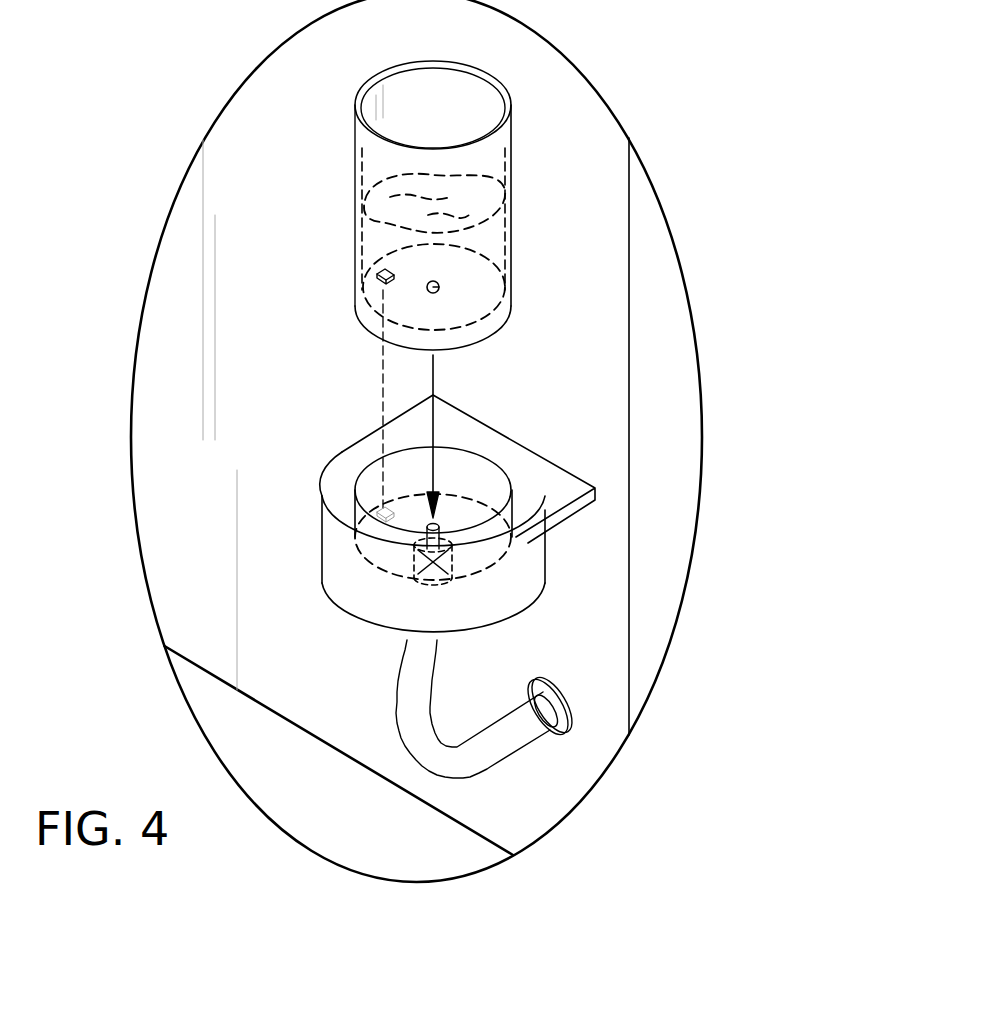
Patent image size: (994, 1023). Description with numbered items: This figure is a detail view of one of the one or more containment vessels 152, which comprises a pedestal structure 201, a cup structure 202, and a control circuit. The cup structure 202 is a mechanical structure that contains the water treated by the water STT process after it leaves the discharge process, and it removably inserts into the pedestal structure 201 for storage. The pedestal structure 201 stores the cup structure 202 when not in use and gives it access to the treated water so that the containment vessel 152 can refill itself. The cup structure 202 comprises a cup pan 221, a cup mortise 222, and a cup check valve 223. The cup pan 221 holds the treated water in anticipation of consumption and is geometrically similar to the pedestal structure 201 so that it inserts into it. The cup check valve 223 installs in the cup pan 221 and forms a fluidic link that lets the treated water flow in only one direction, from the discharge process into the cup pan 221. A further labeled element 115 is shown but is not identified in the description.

The containment vessel 152 is at (128, 95).
The cup structure 202 is at (512, 145).
The cup pan 221 is at (357, 233).
The cup mortise 222 is at (378, 277).
The cup check valve 223 is at (448, 560).
The container bottom 115 is at (472, 341).
The pedestal structure 201 is at (542, 592).